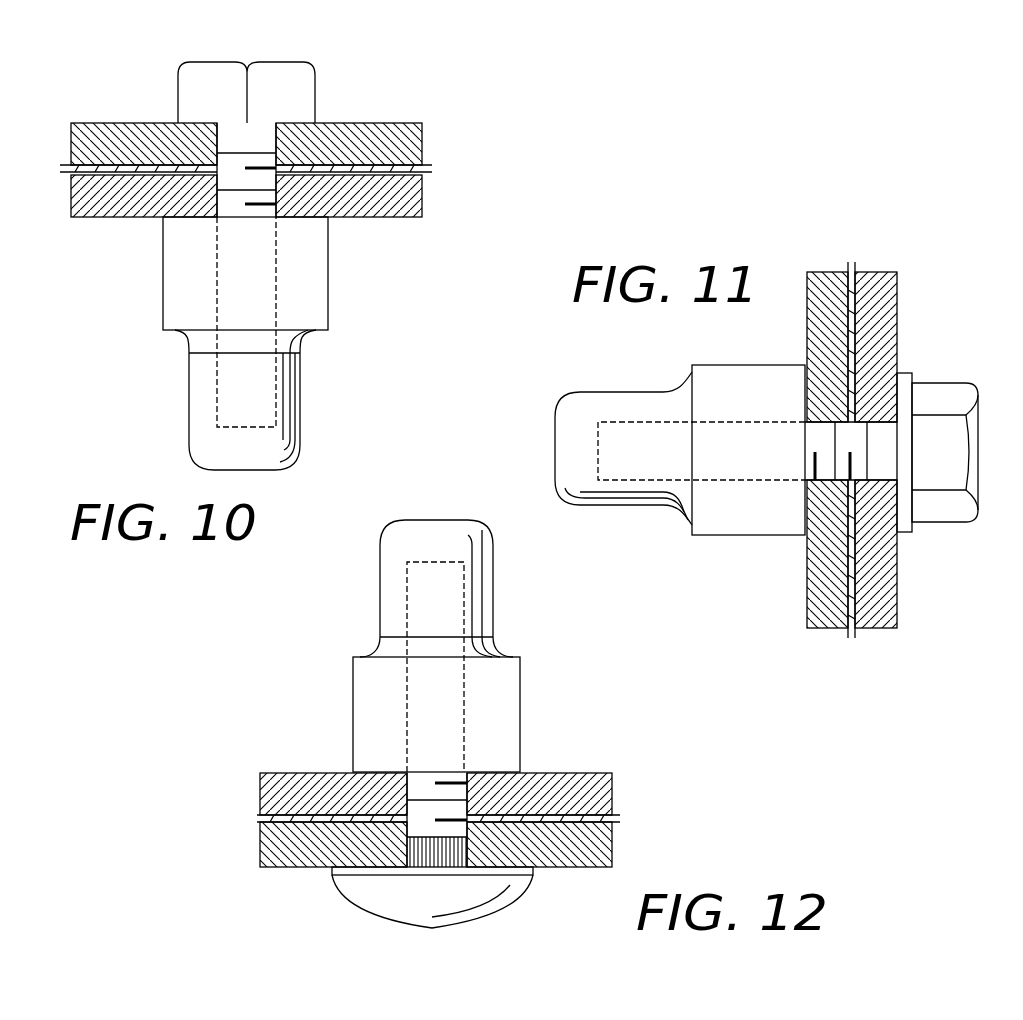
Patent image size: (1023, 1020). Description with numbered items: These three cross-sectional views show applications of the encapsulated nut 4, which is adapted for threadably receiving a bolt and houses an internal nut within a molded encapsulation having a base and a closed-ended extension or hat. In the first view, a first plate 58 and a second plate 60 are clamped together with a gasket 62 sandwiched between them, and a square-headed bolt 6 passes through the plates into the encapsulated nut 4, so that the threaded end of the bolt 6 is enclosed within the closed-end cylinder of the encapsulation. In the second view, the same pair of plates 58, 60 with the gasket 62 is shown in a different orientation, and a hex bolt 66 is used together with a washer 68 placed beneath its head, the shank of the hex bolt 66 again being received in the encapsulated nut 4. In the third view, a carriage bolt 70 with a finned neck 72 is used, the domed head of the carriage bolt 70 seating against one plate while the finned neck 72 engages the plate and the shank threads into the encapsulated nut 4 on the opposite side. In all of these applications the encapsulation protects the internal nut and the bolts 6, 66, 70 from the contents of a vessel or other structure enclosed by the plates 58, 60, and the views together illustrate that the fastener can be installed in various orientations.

In FIG. 10, the encapsulated nut 4 is at (173, 397).
In FIG. 11, the encapsulated nut 4 is at (570, 370).
In FIG. 12, the encapsulated nut 4 is at (535, 613).
In FIG. 10, the bolt 6 is at (178, 64).
In FIG. 10, the first plate 58 is at (424, 126).
In FIG. 11, the first plate 58 is at (893, 630).
In FIG. 12, the first plate 58 is at (262, 862).
In FIG. 10, the second plate 60 is at (424, 213).
In FIG. 11, the second plate 60 is at (805, 630).
In FIG. 12, the second plate 60 is at (262, 776).
In FIG. 10, the gasket 62 is at (430, 170).
In FIG. 11, the gasket 62 is at (852, 630).
In FIG. 12, the gasket 62 is at (258, 819).
In FIG. 11, the hex bolt 66 is at (960, 522).
In FIG. 11, the washer 68 is at (912, 376).
In FIG. 12, the carriage bolt 70 is at (360, 906).
In FIG. 12, the finned neck 72 is at (404, 858).